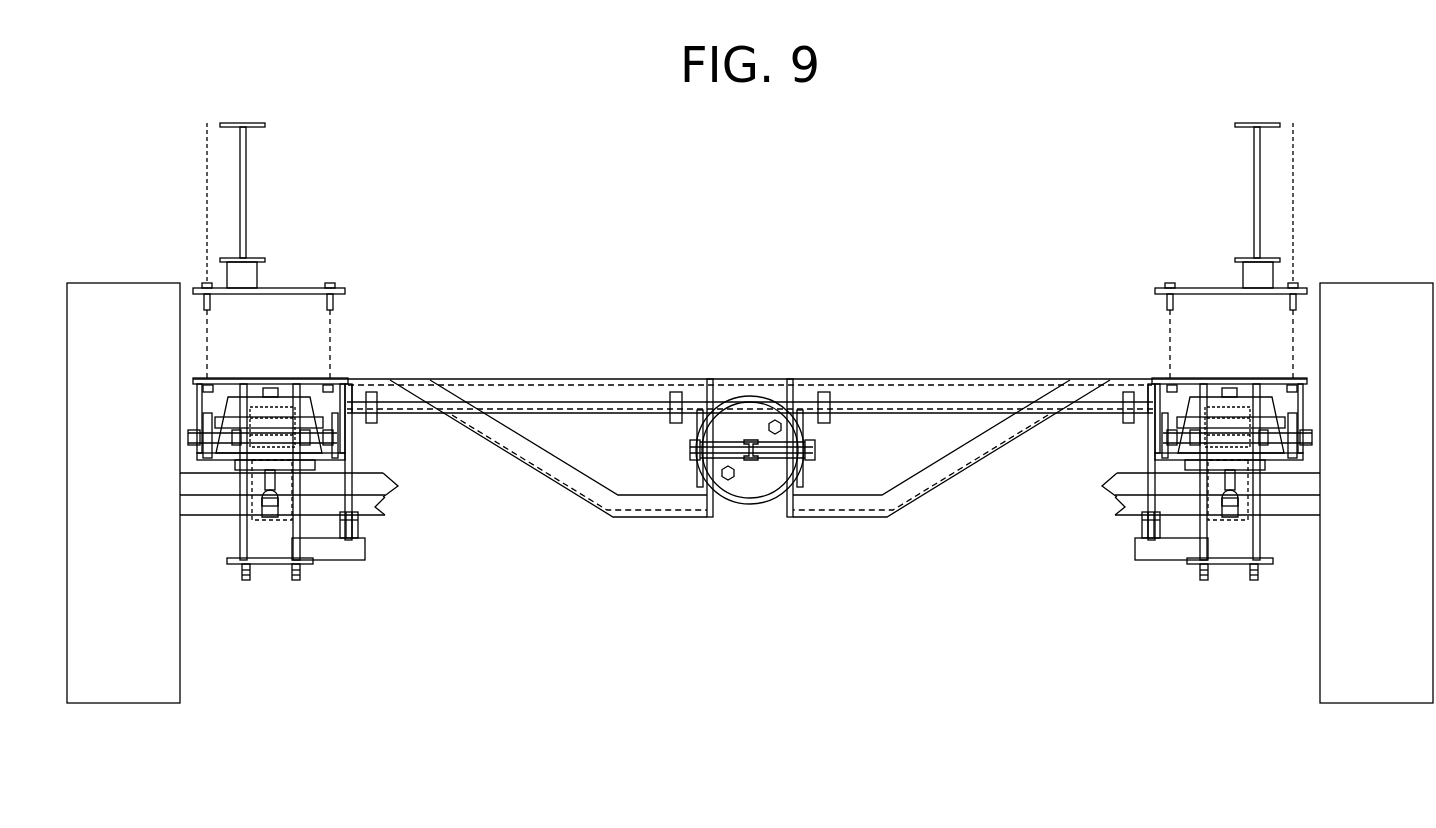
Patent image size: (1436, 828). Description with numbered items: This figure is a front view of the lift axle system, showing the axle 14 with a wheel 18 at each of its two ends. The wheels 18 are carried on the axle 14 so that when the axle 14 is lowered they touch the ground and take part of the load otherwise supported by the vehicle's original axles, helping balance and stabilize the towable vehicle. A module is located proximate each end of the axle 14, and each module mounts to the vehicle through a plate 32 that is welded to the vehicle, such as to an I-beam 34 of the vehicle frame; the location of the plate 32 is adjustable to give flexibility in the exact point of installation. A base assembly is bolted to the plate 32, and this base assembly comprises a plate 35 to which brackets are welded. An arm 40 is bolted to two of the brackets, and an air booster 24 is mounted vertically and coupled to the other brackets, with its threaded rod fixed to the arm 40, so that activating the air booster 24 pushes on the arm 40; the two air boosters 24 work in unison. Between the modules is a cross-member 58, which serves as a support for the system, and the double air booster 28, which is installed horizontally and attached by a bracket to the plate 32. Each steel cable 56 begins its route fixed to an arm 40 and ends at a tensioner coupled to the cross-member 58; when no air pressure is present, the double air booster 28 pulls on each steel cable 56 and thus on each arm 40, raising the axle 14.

The axle 14 is at (212, 505).
The wheels 18 is at (163, 675).
The air booster 24 is at (255, 400).
The double air booster 28 is at (765, 497).
The plate 32 is at (292, 288).
The I-beam 34 is at (245, 183).
The plate 35 is at (341, 378).
The arm 40 is at (337, 553).
The steel cable 56 is at (548, 410).
The cross-member 58 is at (870, 390).